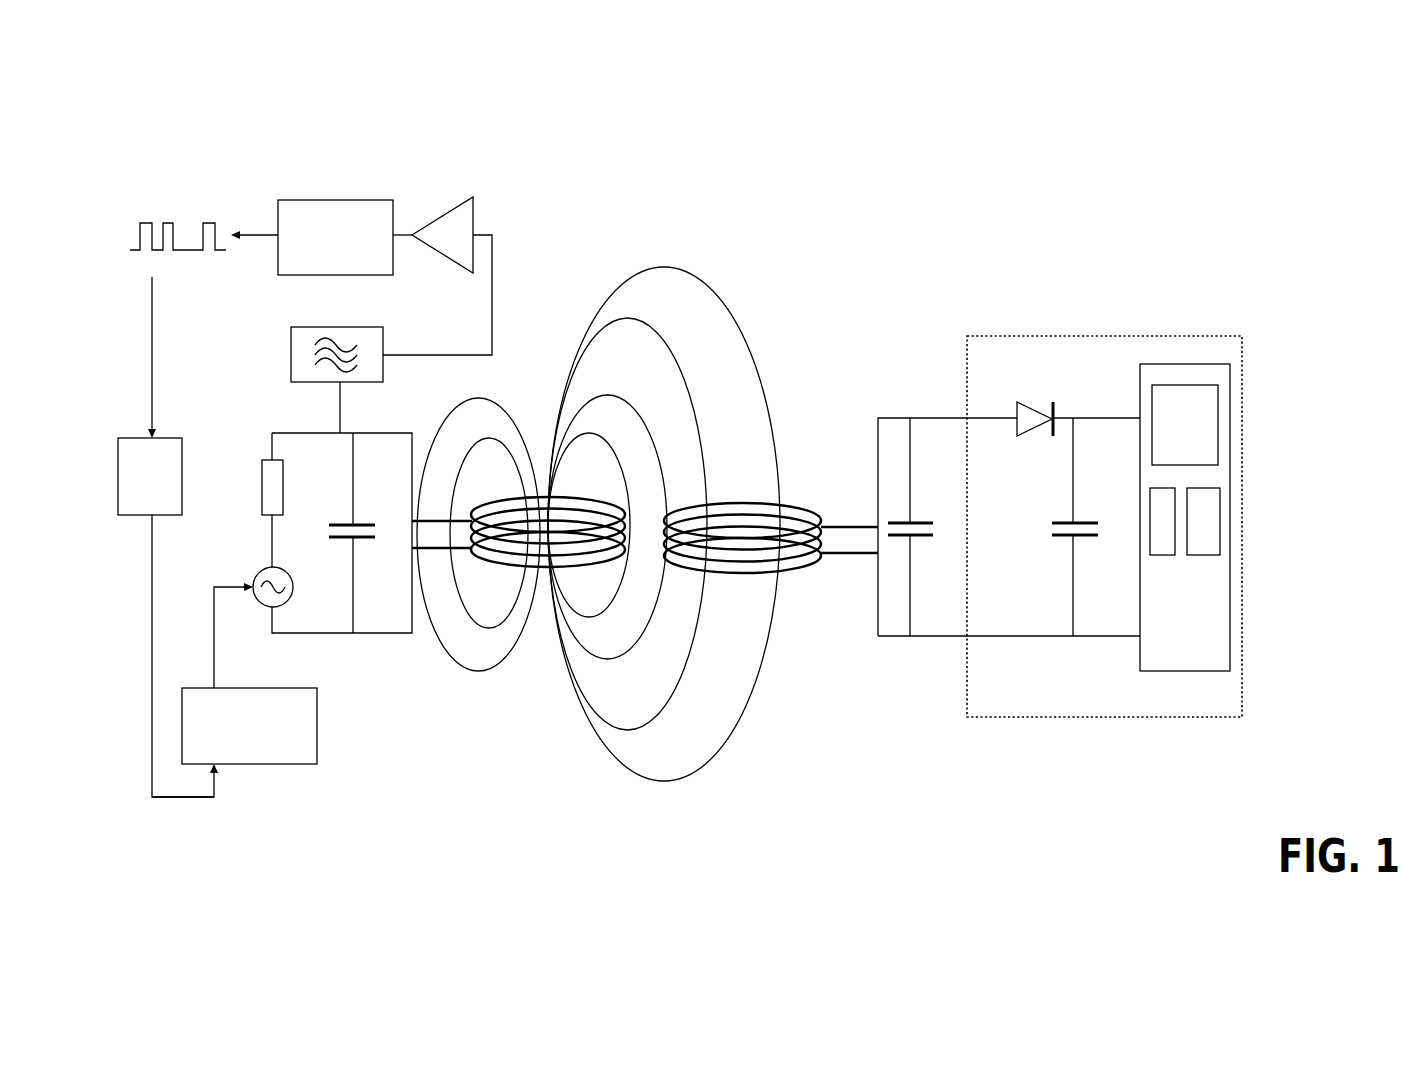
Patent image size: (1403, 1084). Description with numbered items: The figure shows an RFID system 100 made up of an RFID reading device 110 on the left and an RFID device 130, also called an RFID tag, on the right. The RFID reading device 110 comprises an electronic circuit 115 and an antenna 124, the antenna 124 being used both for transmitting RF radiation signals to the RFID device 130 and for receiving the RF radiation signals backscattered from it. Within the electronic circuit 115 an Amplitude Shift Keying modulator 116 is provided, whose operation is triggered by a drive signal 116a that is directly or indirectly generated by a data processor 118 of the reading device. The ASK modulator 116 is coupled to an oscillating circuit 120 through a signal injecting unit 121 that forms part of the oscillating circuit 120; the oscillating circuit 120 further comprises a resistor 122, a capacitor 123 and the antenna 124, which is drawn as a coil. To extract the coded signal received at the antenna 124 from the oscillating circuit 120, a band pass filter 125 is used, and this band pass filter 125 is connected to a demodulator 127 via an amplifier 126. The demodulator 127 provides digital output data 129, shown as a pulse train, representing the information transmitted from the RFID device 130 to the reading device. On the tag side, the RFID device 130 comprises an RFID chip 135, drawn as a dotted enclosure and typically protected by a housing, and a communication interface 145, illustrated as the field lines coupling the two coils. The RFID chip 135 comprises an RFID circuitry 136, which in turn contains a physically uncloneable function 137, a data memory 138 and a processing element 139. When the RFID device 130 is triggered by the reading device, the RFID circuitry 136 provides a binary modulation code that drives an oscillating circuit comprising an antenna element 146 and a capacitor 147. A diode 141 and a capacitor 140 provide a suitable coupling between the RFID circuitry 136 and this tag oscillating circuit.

The RFID system 100 is at (1239, 133).
The RFID reading device 110 is at (125, 815).
The electronic circuit 115 is at (115, 130).
The ASK modulator 116 is at (249, 673).
The drive signal 116a is at (220, 792).
The data processor 118 is at (167, 515).
The oscillating circuit 120 is at (299, 583).
The signal injecting unit 121 is at (256, 574).
The resistor 122 is at (262, 481).
The capacitor 123 is at (367, 545).
The antenna 124 is at (500, 568).
The band pass filter 125 is at (383, 338).
The amplifier 126 is at (477, 212).
The demodulator 127 is at (270, 319).
The digital output data 129 is at (182, 203).
The RFID device 130 is at (1245, 813).
The RFID chip 135 is at (1078, 336).
The RFID circuitry 136 is at (1140, 372).
The physically uncloneable function 137 is at (1218, 405).
The data memory 138 is at (1163, 555).
The processing element 139 is at (1220, 505).
The capacitor 140 is at (1060, 540).
The diode 141 is at (1030, 430).
The communication interface 145 is at (816, 362).
The antenna element 146 is at (795, 575).
The capacitor 147 is at (920, 540).